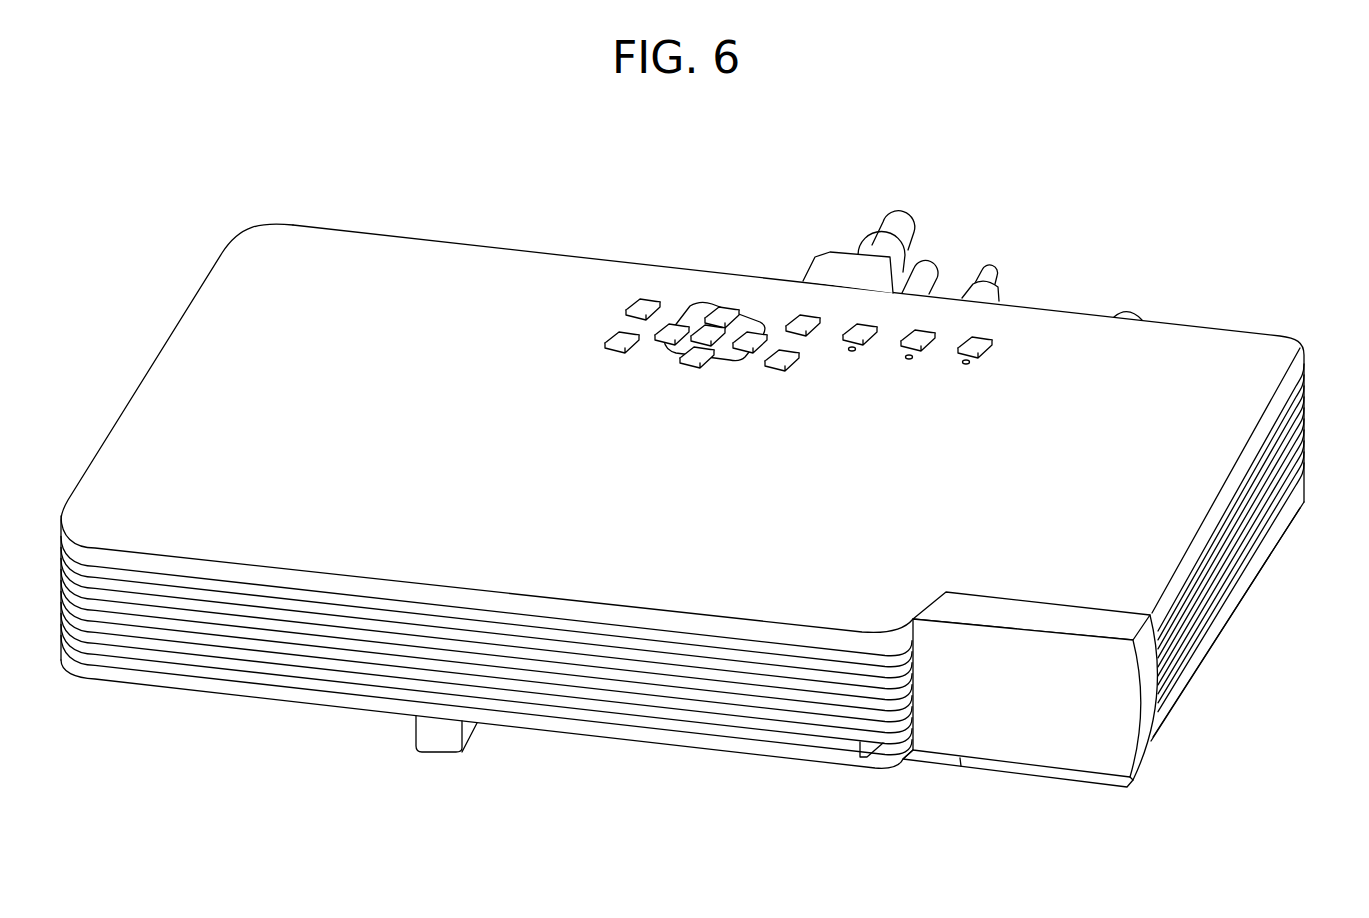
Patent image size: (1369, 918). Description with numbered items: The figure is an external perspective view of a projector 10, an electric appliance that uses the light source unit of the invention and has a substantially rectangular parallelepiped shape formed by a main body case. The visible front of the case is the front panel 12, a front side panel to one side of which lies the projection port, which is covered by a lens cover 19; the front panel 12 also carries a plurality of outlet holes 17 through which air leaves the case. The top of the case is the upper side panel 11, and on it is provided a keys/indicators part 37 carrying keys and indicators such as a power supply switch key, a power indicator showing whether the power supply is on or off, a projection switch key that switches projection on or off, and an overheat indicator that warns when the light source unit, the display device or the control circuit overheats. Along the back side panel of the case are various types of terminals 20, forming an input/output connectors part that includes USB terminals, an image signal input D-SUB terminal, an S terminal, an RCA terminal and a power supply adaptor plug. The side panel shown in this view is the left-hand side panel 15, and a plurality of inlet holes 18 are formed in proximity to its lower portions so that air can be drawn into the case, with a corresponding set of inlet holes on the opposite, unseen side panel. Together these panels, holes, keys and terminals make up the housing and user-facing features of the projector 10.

The projector 10 is at (632, 198).
The upper side panel 11 is at (425, 278).
The front panel 12 is at (575, 715).
The left-hand side panel 15 is at (1228, 612).
The outlet holes 17 is at (673, 733).
The inlet holes 18 is at (1265, 512).
The lens cover 19 is at (1053, 737).
The terminals 20 is at (937, 240).
The keys/indicators part 37 is at (724, 290).